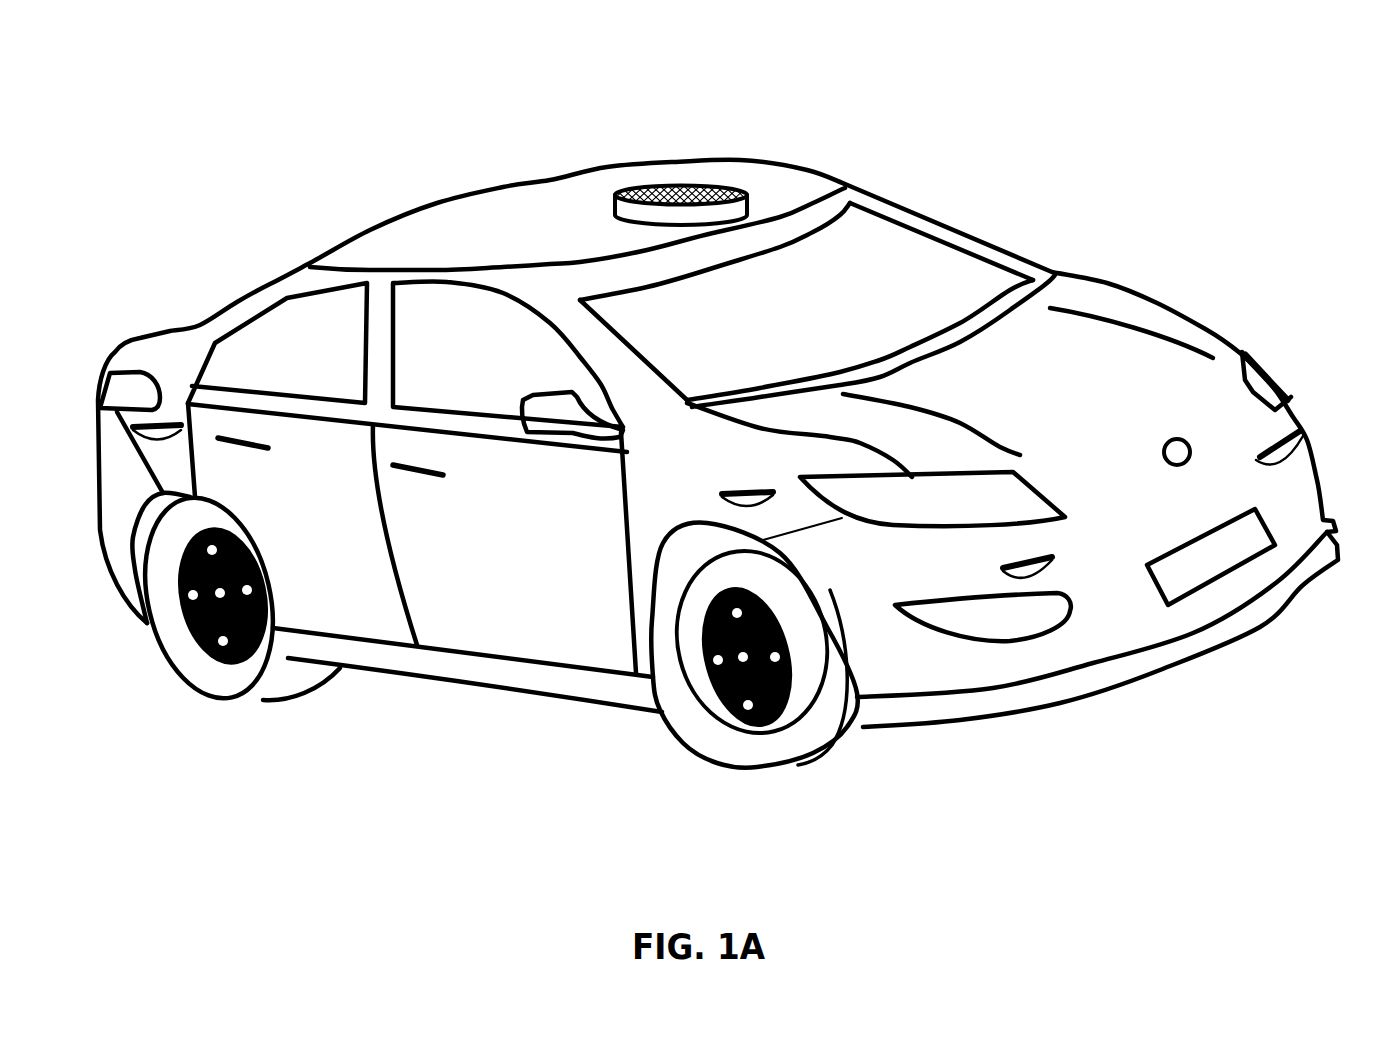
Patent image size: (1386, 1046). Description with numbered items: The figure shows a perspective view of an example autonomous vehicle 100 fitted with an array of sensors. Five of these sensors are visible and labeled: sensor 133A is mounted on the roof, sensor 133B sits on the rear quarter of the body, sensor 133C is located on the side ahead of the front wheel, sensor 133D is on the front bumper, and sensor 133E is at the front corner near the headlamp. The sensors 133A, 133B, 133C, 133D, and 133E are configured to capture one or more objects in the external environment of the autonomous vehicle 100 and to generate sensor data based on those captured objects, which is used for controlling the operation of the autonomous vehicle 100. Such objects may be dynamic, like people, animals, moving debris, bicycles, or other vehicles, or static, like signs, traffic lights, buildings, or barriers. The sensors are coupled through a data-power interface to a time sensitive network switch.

The autonomous vehicle 100 is at (1099, 116).
The sensor 133A is at (697, 186).
The sensor 133B is at (182, 425).
The sensor 133C is at (750, 493).
The sensor 133D is at (1013, 565).
The sensor 133E is at (1257, 452).